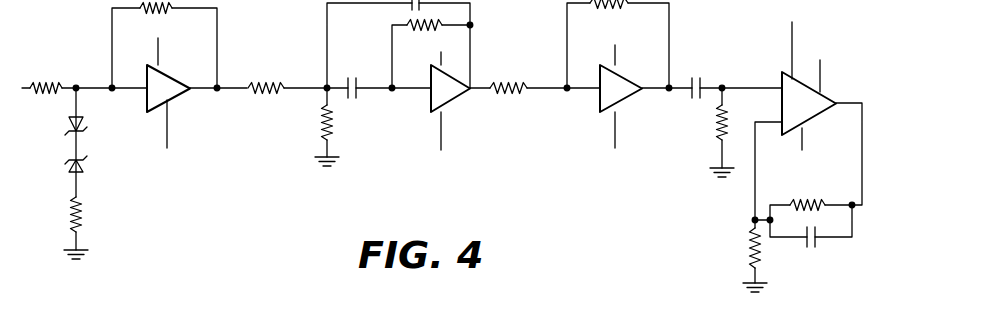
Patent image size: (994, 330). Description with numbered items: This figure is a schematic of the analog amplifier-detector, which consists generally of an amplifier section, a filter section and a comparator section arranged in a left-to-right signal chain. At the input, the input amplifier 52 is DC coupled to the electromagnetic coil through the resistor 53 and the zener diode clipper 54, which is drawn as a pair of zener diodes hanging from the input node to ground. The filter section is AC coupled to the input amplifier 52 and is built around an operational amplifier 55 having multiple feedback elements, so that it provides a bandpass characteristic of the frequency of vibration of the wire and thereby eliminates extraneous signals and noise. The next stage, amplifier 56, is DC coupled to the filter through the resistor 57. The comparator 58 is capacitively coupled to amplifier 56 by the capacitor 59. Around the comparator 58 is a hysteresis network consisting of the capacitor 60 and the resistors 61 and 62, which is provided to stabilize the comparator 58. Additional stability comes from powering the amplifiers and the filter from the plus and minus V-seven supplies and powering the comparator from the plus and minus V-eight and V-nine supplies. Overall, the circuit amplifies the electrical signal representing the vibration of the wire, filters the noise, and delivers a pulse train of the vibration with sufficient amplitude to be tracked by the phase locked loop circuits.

The input amplifier 52 is at (177, 92).
The resistor 53 is at (55, 84).
The zener diode clipper 54 is at (99, 146).
The operational amplifier 55 is at (453, 94).
The amplifier 56 is at (625, 94).
The resistor 57 is at (513, 91).
The comparator 58 is at (808, 112).
The capacitor 59 is at (696, 78).
The capacitor 60 is at (803, 246).
The resistor 61 is at (822, 200).
The resistor 62 is at (752, 238).